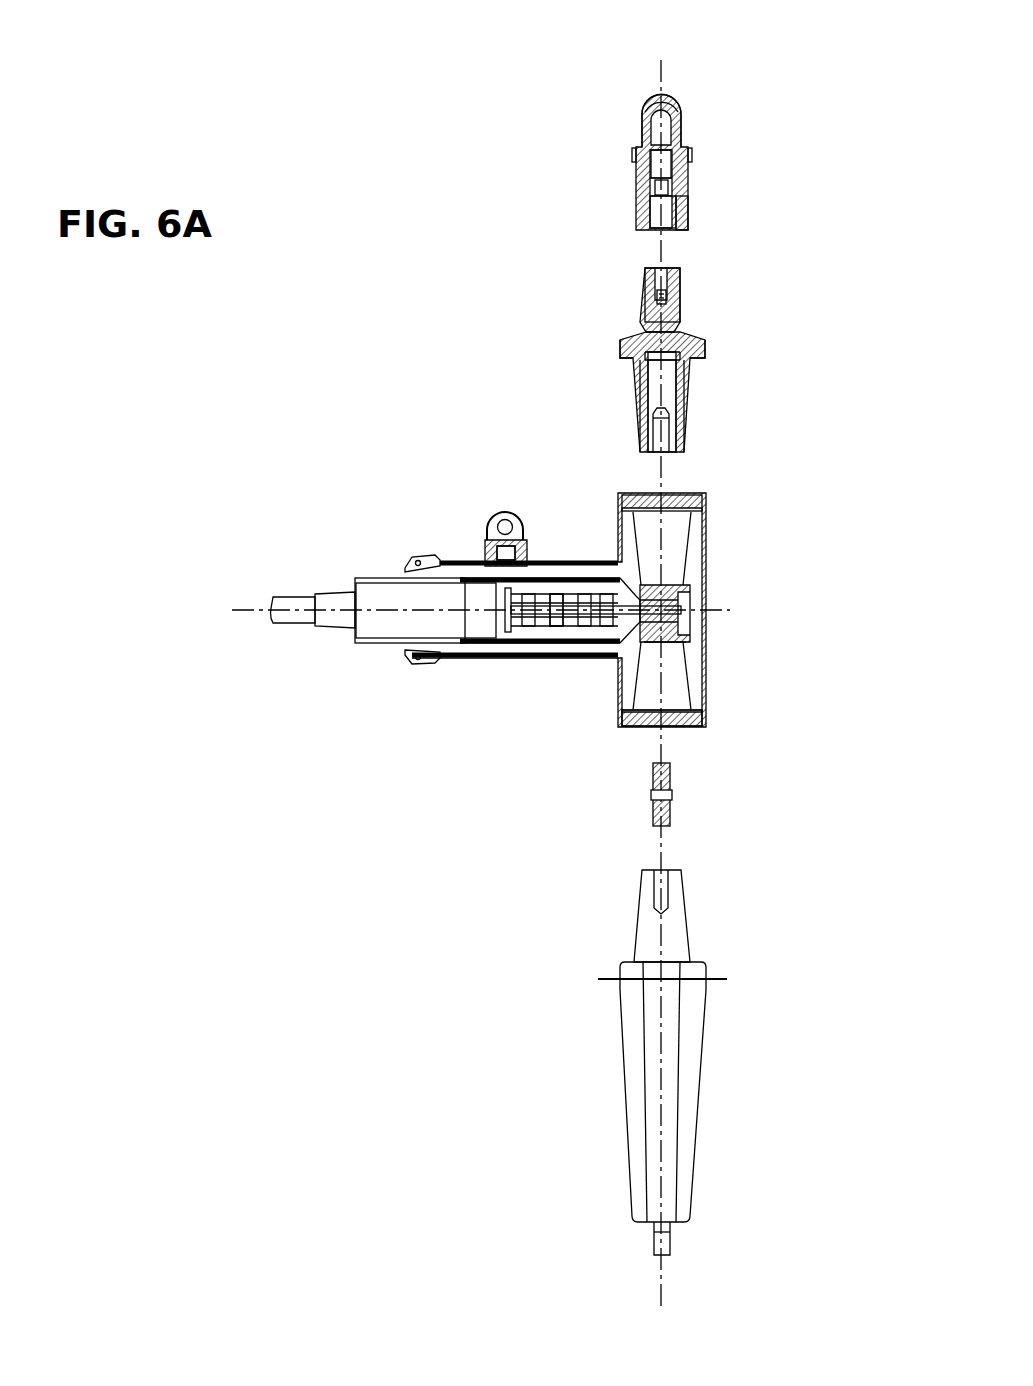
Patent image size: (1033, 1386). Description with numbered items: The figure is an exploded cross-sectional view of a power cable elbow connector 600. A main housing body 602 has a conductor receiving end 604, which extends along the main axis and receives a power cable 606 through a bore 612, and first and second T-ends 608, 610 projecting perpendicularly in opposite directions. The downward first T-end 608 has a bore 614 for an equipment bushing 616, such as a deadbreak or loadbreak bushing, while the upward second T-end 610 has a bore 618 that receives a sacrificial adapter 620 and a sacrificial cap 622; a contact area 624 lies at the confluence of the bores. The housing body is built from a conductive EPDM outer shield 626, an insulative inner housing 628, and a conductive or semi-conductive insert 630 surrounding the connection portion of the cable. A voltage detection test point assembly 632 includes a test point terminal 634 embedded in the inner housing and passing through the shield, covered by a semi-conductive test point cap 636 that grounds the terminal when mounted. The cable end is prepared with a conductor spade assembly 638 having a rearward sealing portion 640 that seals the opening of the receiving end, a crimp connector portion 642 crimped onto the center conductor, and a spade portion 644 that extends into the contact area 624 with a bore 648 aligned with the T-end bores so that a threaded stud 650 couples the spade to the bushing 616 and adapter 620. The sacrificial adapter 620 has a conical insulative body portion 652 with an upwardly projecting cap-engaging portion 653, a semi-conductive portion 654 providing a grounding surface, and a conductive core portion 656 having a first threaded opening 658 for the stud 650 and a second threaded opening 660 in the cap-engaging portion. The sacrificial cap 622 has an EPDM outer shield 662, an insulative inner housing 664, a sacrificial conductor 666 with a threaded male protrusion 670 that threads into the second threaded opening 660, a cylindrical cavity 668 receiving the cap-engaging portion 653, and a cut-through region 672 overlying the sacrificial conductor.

The power cable elbow connector 600 is at (462, 428).
The main housing body 602 is at (410, 646).
The conductor receiving end 604 is at (380, 548).
The power cable 606 is at (278, 620).
The first T-end 608 is at (728, 700).
The second T-end 610 is at (728, 530).
The bore 612 is at (540, 632).
The bore 614 is at (682, 700).
The equipment bushing 616 is at (716, 966).
The bore 618 is at (650, 528).
The sacrificial adapter 620 is at (727, 385).
The sacrificial cap 622 is at (605, 160).
The contact area 624 is at (676, 603).
The outer shield 626 is at (465, 662).
The insulative inner housing 628 is at (584, 656).
The insert 630 is at (574, 574).
The voltage detection test point assembly 632 is at (470, 534).
The test point terminal 634 is at (503, 558).
The test point cap 636 is at (510, 516).
The conductor spade assembly 638 is at (510, 642).
The rearward sealing portion 640 is at (426, 610).
The crimp connector portion 642 is at (542, 600).
The spade portion 644 is at (681, 618).
The bore 648 is at (651, 702).
The threaded stud 650 is at (645, 806).
The insulative body portion 652 is at (686, 416).
The cap-engaging portion 653 is at (650, 296).
The semi-conductive portion 654 is at (630, 338).
The conductive core portion 656 is at (656, 393).
The first threaded opening 658 is at (664, 440).
The second threaded opening 660 is at (668, 280).
The outer shield 662 is at (650, 118).
The insulative inner housing 664 is at (684, 203).
The sacrificial conductor 666 is at (700, 158).
The cylindrical cavity 668 is at (655, 222).
The threaded male protrusion 670 is at (668, 185).
The cut-through region 672 is at (686, 128).